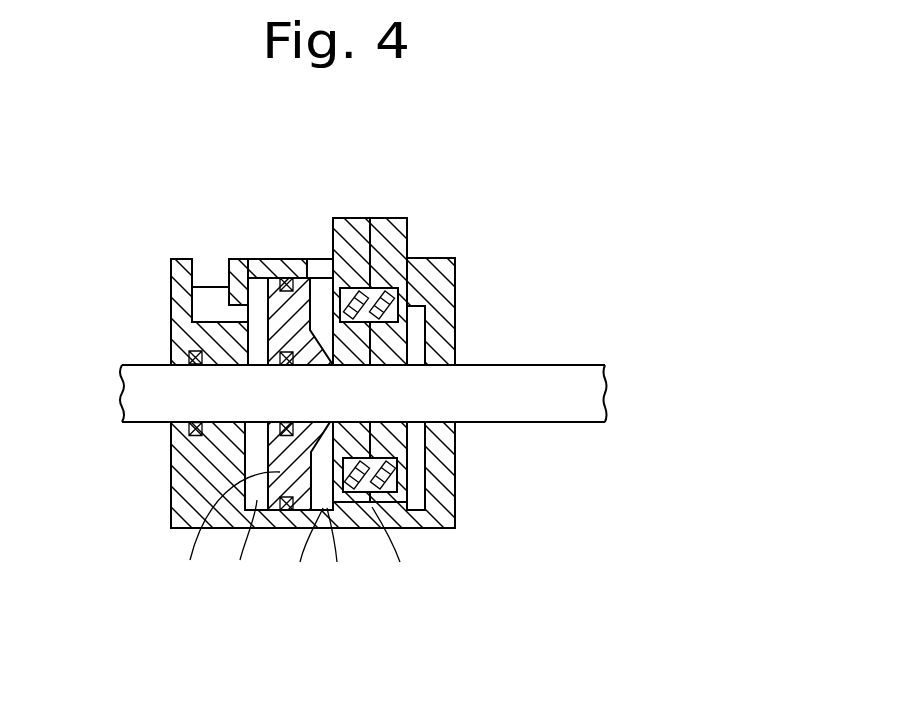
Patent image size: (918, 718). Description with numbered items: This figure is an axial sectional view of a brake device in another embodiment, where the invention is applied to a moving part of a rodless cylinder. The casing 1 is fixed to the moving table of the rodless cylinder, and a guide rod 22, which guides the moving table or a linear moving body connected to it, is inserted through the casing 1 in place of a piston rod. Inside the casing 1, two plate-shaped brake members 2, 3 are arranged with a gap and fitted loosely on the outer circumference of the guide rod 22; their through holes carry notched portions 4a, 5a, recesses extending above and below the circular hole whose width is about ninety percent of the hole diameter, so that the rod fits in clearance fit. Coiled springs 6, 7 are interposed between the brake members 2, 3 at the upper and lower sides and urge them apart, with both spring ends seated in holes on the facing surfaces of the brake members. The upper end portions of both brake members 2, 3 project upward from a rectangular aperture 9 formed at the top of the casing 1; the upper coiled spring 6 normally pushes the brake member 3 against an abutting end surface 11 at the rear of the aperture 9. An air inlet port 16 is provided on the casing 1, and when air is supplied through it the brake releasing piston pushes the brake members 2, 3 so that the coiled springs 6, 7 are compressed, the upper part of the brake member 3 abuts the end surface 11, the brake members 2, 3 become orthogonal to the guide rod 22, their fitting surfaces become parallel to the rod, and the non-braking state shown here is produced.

The casing 1 is at (178, 283).
The air inlet port 16 is at (210, 277).
The rectangular aperture 9 is at (318, 267).
The brake member 2 is at (353, 236).
The brake member 3 is at (387, 233).
The coiled spring 6 is at (410, 258).
The abutting end surface 11 is at (398, 288).
The notched portion 5a is at (402, 360).
The coiled spring 7 is at (398, 488).
The guide rod 22 is at (152, 402).
The notched portion 4a is at (354, 422).